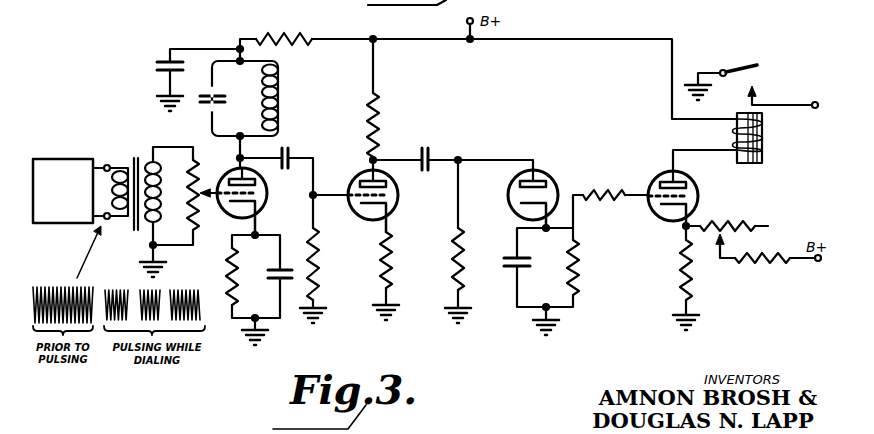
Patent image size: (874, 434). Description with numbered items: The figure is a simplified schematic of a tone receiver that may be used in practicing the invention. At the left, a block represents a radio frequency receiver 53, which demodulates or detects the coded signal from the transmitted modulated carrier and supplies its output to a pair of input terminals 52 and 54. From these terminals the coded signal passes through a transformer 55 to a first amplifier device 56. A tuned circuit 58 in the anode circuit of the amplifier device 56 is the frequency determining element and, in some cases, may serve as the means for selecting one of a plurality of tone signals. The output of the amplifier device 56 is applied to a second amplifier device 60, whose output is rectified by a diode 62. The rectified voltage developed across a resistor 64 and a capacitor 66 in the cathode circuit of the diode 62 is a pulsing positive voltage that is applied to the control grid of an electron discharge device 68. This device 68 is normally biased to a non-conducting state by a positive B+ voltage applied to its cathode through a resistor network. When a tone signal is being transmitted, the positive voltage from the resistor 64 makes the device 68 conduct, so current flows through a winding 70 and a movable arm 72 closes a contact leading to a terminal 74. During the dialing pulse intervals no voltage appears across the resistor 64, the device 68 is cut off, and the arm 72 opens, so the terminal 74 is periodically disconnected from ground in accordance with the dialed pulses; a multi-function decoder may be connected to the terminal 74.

The input terminal 52 is at (108, 165).
The radio frequency receiver 53 is at (74, 158).
The input terminal 54 is at (106, 220).
The transformer 55 is at (155, 143).
The amplifier device 56 is at (265, 203).
The tuned circuit 58 is at (258, 91).
The second amplifier device 60 is at (353, 175).
The diode 62 is at (551, 176).
The resistor 64 is at (580, 264).
The capacitor 66 is at (514, 260).
The electron discharge device 68 is at (657, 174).
The winding 70 is at (765, 138).
The movable arm 72 is at (755, 65).
The terminal 74 is at (815, 102).